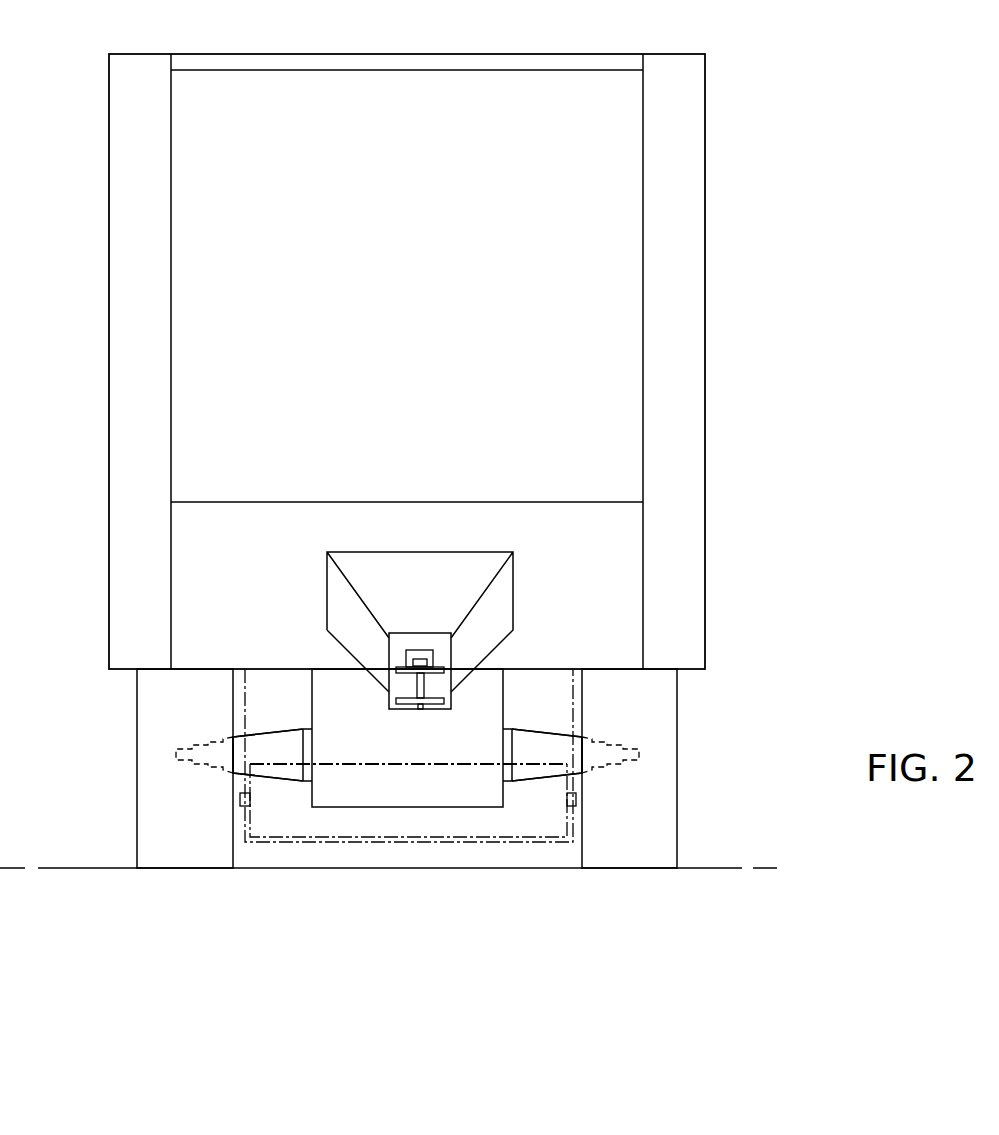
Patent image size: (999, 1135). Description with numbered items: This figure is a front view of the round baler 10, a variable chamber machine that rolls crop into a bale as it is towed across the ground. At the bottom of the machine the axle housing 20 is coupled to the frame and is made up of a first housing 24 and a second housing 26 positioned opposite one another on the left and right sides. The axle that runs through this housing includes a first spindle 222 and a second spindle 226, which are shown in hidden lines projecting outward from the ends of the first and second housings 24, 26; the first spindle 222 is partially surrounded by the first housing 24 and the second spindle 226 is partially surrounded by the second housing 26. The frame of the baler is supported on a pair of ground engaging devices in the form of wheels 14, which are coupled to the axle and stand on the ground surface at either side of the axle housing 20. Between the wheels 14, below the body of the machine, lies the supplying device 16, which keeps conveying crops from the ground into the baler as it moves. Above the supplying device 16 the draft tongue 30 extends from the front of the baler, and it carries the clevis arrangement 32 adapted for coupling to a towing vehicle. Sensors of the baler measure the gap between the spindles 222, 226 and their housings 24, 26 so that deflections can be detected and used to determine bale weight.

The round baler 10 is at (813, 185).
The wheels 14 is at (162, 792).
The supplying device 16 is at (522, 812).
The axle housing 20 is at (283, 708).
The first housing 24 is at (265, 728).
The second housing 26 is at (557, 728).
The draft tongue 30 is at (493, 661).
The clevis arrangement 32 is at (413, 638).
The first spindle 222 is at (205, 760).
The second spindle 226 is at (605, 762).